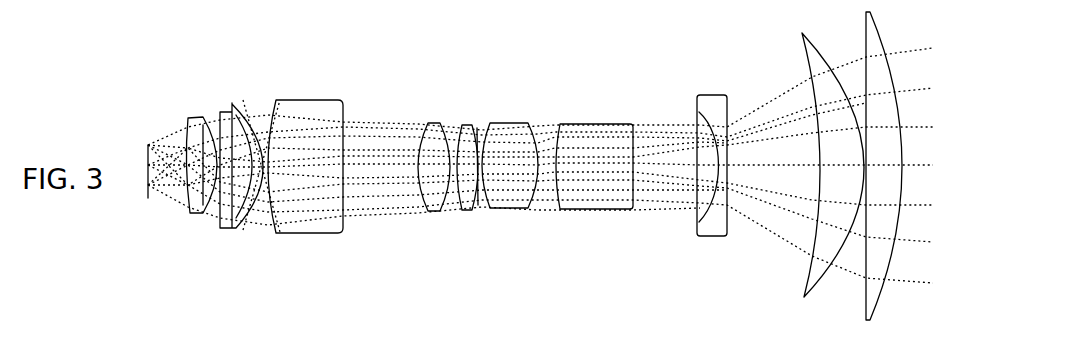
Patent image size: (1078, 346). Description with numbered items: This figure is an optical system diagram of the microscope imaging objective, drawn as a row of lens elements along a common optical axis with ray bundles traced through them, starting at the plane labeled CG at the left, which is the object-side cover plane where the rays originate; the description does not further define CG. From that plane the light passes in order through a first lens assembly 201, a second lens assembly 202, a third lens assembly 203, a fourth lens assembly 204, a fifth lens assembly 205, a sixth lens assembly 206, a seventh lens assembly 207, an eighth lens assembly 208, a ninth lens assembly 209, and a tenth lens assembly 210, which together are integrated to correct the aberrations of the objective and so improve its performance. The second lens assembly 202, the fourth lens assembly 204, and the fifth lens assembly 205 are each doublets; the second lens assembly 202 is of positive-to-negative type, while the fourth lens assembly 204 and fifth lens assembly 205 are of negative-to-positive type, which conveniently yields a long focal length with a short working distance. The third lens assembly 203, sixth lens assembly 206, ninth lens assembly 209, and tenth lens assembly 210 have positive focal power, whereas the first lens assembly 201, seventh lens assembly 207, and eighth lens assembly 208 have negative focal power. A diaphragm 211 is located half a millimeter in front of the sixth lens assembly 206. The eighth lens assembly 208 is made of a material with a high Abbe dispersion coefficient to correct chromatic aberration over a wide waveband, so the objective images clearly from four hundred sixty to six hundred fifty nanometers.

The cover glass CG is at (145, 186).
The first lens assembly 201 is at (194, 184).
The second lens assembly 202 is at (235, 229).
The third lens assembly 203 is at (307, 234).
The fourth lens assembly 204 is at (434, 211).
The fifth lens assembly 205 is at (468, 210).
The sixth lens assembly 206 is at (513, 209).
The seventh lens assembly 207 is at (585, 200).
The eighth lens assembly 208 is at (716, 236).
The ninth lens assembly 209 is at (808, 287).
The tenth lens assembly 210 is at (873, 310).
The diaphragm 211 is at (484, 140).